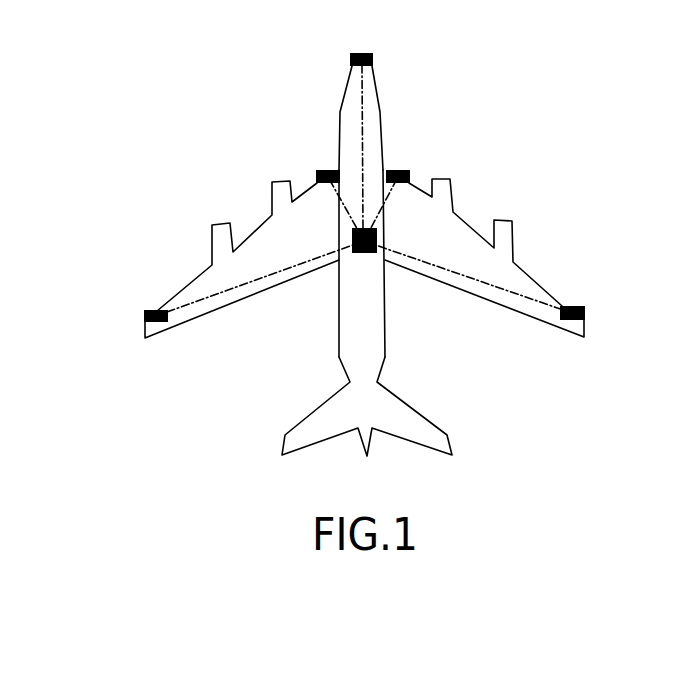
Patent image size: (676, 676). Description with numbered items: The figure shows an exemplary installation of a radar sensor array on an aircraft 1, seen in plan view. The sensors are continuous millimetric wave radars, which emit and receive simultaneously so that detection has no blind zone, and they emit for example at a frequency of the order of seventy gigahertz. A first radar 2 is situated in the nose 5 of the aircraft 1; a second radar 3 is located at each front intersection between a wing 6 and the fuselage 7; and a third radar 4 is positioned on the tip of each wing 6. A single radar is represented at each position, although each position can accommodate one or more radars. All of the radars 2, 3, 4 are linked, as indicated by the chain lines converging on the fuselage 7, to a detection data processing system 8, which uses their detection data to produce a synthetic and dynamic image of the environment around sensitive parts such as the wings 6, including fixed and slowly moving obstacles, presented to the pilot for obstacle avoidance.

The aircraft 1 is at (312, 102).
The first radar 2 is at (373, 60).
The second radar 3 is at (325, 170).
The third radar 4 is at (153, 310).
The nose 5 is at (380, 100).
The wing 6 is at (292, 282).
The fuselage 7 is at (340, 330).
The detection data processing system 8 is at (363, 253).